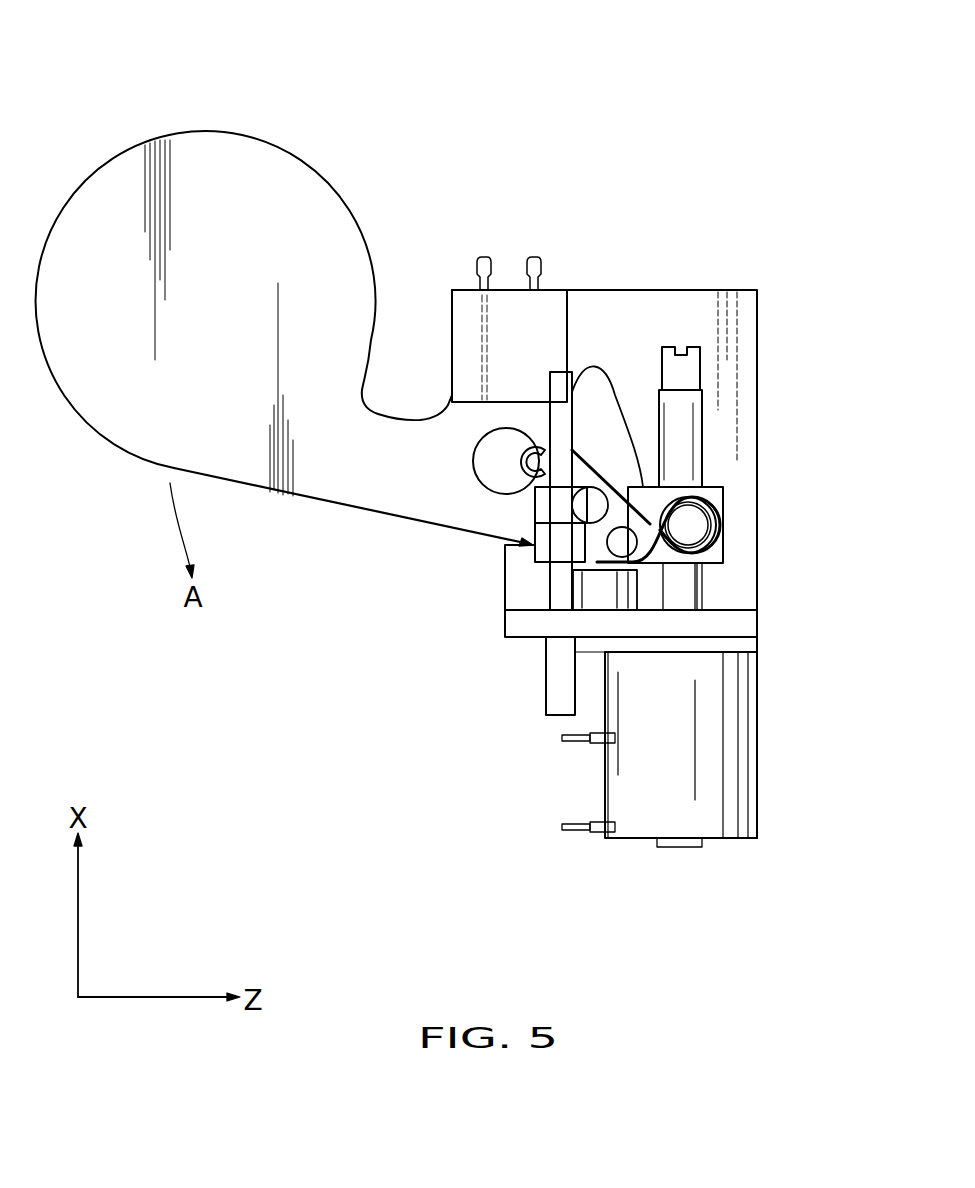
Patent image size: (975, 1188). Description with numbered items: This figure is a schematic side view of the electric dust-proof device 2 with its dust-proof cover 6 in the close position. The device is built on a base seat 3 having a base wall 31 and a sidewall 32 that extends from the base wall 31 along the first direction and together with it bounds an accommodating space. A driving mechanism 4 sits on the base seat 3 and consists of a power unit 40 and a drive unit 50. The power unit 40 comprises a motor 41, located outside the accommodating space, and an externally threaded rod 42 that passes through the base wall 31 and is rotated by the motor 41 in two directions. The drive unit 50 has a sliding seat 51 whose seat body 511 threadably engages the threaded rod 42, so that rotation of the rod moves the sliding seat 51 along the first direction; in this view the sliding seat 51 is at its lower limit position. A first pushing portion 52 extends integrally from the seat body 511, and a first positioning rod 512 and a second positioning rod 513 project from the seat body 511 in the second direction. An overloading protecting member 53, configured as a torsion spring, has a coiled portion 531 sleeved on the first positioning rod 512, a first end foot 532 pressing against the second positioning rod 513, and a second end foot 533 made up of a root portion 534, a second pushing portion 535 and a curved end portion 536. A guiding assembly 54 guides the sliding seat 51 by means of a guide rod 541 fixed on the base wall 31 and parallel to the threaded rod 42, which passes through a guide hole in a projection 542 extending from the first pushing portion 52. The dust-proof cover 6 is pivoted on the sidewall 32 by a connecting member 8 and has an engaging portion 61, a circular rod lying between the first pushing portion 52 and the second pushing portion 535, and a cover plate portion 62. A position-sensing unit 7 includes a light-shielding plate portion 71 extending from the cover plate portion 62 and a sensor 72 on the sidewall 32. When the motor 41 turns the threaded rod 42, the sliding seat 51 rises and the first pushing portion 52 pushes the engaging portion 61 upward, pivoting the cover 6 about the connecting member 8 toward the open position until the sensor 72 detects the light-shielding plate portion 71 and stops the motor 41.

The electric dust-proof device 2 is at (611, 160).
The base seat 3 is at (728, 278).
The driving mechanism 4 is at (722, 587).
The dust-proof cover 6 is at (203, 122).
The position-sensing unit 7 is at (461, 280).
The connecting member 8 is at (493, 440).
The base wall 31 is at (757, 630).
The sidewall 32 is at (758, 325).
The power unit 40 is at (770, 713).
The motor 41 is at (757, 765).
The externally threaded rod 42 is at (700, 610).
The drive unit 50 is at (740, 493).
The sliding seat 51 is at (728, 488).
The first pushing portion 52 is at (548, 530).
The overloading protecting member 53 is at (740, 524).
The guiding assembly 54 is at (505, 548).
The engaging portion 61 is at (580, 503).
The cover plate portion 62 is at (133, 148).
The light-shielding plate portion 71 is at (452, 357).
The sensor 72 is at (557, 297).
The seat body 511 is at (727, 553).
The first positioning rod 512 is at (692, 495).
The second positioning rod 513 is at (565, 588).
The coiled portion 531 is at (684, 480).
The first end foot 532 is at (628, 570).
The second end foot 533 is at (643, 487).
The root portion 534 is at (658, 480).
The second pushing portion 535 is at (612, 432).
The curved end portion 536 is at (520, 453).
The guide rod 541 is at (547, 420).
The projection 542 is at (537, 515).